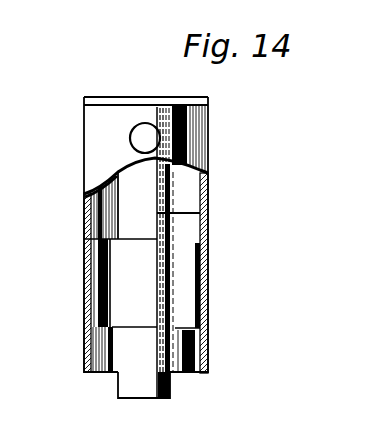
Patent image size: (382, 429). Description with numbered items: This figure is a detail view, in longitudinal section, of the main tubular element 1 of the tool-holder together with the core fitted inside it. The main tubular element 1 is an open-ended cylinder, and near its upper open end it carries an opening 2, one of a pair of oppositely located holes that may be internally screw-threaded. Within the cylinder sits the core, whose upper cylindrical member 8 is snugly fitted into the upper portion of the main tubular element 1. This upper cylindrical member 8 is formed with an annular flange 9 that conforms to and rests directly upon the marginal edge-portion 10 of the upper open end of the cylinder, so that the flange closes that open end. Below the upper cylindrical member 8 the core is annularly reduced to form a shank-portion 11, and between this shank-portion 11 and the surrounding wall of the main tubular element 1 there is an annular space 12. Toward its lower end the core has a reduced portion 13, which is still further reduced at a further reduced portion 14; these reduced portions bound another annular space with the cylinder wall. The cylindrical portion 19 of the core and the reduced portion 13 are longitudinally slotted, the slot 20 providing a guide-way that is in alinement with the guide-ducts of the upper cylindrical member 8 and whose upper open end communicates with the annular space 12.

The main tubular element 1 is at (83, 235).
The opening 2 is at (130, 138).
The upper cylindrical member 8 is at (178, 168).
The annular flange 9 is at (86, 97).
The marginal edge-portion 10 is at (84, 104).
The shank-portion 11 is at (200, 213).
The annular space 12 is at (188, 196).
The reduced portion 13 is at (103, 373).
The further reduced portion 14 is at (122, 387).
The cylindrical portion 19 is at (160, 280).
The slot 20 is at (98, 292).